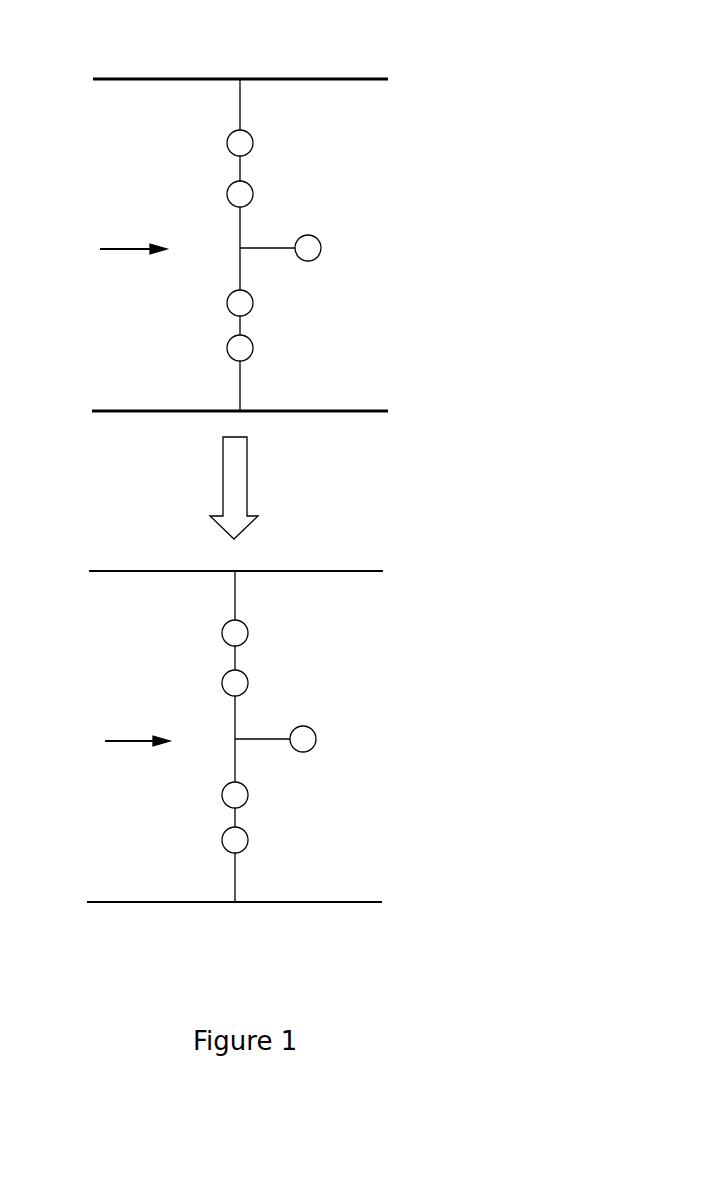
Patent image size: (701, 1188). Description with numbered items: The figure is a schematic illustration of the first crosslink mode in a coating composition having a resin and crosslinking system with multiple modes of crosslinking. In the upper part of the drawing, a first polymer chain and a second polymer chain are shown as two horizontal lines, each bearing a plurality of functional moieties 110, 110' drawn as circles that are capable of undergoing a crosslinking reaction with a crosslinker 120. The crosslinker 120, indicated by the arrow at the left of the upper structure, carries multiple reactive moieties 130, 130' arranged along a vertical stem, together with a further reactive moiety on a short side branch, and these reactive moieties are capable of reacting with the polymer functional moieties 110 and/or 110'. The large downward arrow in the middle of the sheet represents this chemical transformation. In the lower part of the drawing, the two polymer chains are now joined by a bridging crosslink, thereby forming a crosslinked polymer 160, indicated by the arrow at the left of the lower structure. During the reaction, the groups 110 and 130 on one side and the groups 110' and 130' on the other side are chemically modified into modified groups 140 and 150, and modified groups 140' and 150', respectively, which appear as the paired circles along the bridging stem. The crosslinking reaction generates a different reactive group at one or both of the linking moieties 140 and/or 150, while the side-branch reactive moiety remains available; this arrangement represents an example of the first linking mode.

The functional moiety 110 is at (213, 363).
The functional moiety 110' is at (266, 117).
The crosslinker 120 is at (112, 254).
The reactive moiety 130 is at (268, 303).
The reactive moiety 130' is at (267, 220).
The modified group 140 is at (208, 855).
The modified group 140' is at (260, 608).
The modified group 150 is at (262, 795).
The modified group 150' is at (260, 713).
The crosslinked polymer 160 is at (116, 746).